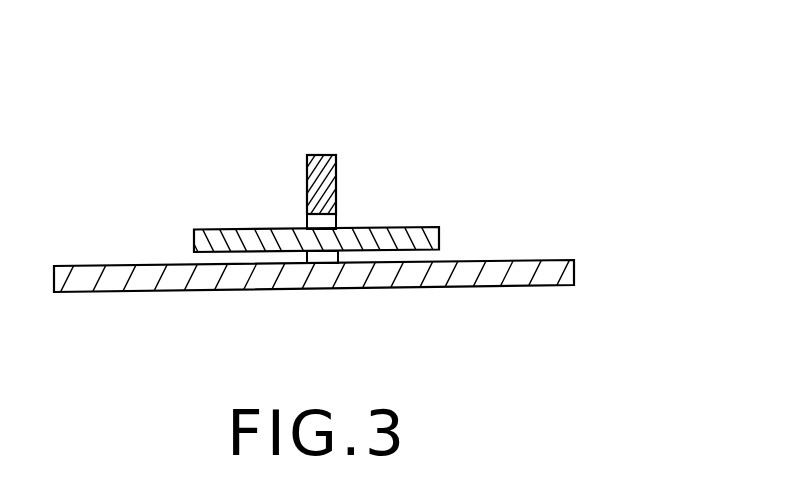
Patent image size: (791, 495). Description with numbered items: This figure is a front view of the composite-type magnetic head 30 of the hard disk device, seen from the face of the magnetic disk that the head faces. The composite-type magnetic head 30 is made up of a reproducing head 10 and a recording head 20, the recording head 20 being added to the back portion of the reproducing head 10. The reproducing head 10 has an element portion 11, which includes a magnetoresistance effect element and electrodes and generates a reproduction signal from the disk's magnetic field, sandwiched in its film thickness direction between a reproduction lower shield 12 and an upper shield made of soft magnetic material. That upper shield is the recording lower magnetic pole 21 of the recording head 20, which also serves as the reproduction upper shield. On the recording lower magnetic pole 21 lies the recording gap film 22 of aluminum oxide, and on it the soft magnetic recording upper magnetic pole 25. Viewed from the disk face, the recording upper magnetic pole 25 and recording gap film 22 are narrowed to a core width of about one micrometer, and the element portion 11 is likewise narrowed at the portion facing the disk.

The composite-type magnetic head 30 is at (403, 178).
The recording head 20 is at (441, 183).
The reproducing head 10 is at (403, 278).
The recording upper magnetic pole 25 is at (327, 175).
The recording gap film 22 is at (328, 222).
The recording lower magnetic pole 21 is at (427, 243).
The element portion 11 is at (323, 258).
The reproduction lower shield 12 is at (432, 280).